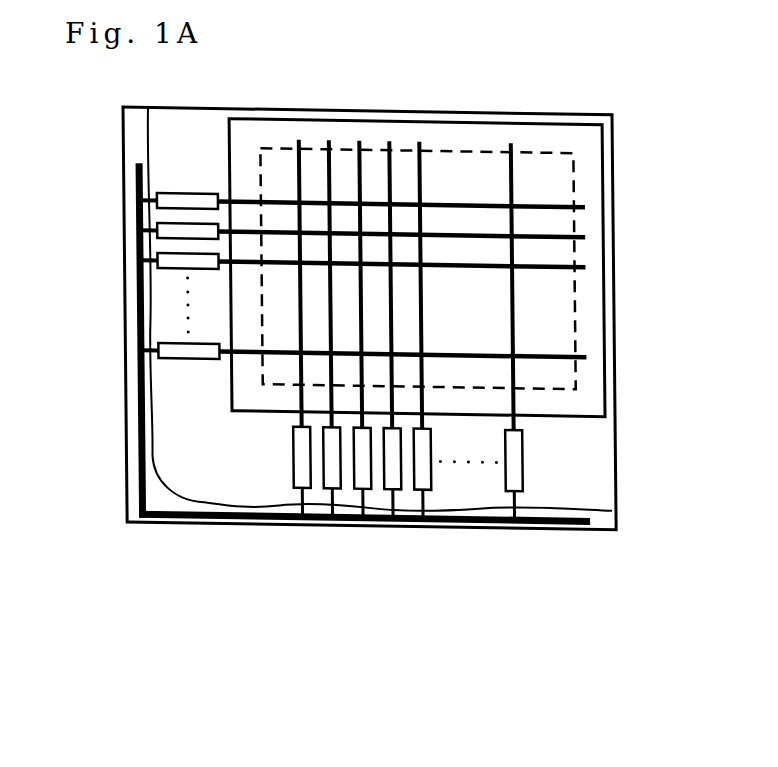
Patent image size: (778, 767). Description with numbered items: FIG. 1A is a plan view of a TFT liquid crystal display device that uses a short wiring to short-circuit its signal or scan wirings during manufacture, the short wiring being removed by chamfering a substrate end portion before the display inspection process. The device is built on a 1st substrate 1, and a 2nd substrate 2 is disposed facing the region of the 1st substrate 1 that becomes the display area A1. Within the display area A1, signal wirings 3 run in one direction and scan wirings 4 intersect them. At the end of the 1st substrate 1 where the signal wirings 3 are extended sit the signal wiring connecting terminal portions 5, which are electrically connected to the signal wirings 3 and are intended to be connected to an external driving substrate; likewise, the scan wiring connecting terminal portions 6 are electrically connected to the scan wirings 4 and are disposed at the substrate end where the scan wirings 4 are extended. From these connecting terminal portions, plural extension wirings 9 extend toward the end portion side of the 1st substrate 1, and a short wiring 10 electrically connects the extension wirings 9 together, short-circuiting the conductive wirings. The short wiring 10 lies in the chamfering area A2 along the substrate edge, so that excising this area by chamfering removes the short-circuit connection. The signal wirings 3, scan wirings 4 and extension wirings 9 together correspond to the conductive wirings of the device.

The 1st substrate 1 is at (562, 113).
The 2nd substrate 2 is at (232, 408).
The signal wirings 3 is at (525, 110).
The scan wirings 4 is at (628, 193).
The signal wiring connecting terminal portions 5 is at (302, 475).
The scan wiring connecting terminal portions 6 is at (178, 352).
The extension wirings 9 is at (515, 512).
The short wiring 10 is at (138, 463).
The display area A1 is at (550, 392).
The chamfering area A2 is at (133, 138).